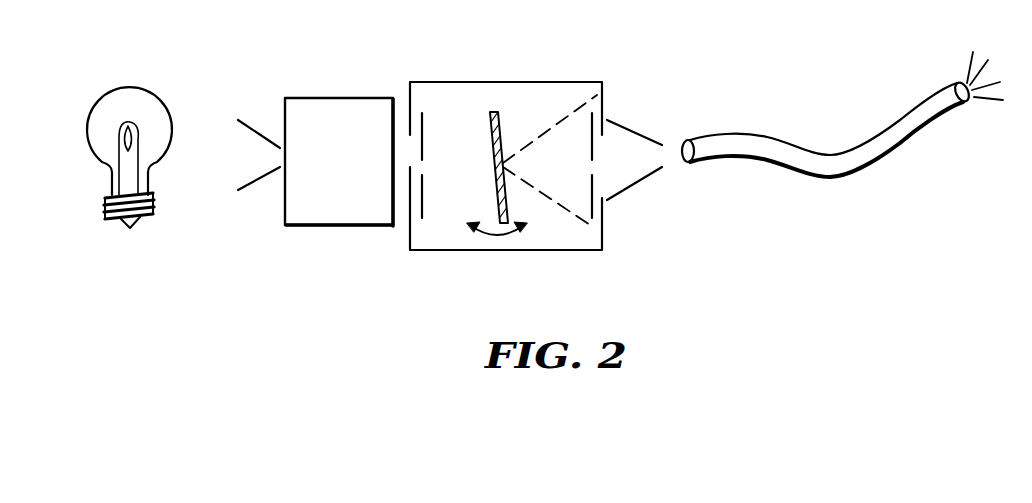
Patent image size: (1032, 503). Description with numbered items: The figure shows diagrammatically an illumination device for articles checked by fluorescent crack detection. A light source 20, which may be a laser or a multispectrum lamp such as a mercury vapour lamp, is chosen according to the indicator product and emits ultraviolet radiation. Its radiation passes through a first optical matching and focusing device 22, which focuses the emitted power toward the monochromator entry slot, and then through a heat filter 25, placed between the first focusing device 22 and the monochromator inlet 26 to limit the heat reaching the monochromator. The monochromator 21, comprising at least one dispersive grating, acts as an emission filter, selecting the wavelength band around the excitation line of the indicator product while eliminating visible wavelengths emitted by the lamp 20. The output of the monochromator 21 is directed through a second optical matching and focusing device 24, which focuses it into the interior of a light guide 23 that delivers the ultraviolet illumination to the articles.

The light source 20 is at (128, 227).
The monochromator 21 is at (467, 233).
The first optical matching and focusing device 22 is at (263, 180).
The light guide 23 is at (840, 167).
The second optical matching and focusing device 24 is at (633, 183).
The heat filter 25 is at (305, 213).
The monochromator inlet 26 is at (410, 168).